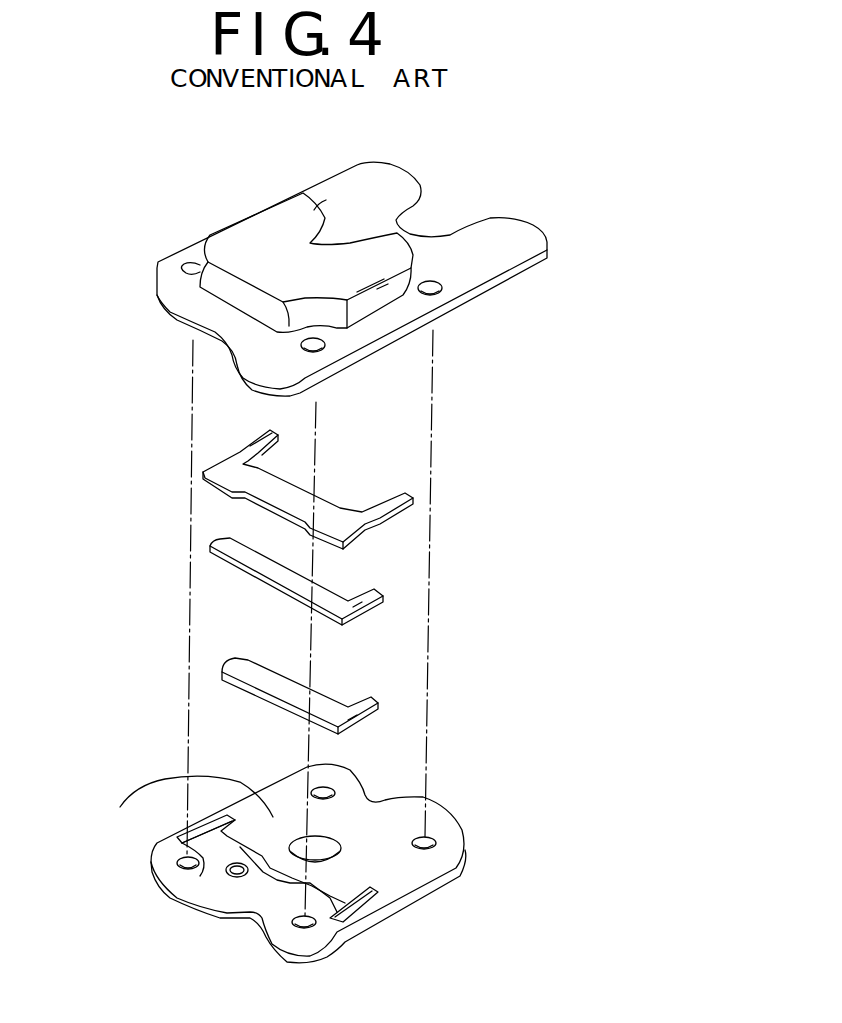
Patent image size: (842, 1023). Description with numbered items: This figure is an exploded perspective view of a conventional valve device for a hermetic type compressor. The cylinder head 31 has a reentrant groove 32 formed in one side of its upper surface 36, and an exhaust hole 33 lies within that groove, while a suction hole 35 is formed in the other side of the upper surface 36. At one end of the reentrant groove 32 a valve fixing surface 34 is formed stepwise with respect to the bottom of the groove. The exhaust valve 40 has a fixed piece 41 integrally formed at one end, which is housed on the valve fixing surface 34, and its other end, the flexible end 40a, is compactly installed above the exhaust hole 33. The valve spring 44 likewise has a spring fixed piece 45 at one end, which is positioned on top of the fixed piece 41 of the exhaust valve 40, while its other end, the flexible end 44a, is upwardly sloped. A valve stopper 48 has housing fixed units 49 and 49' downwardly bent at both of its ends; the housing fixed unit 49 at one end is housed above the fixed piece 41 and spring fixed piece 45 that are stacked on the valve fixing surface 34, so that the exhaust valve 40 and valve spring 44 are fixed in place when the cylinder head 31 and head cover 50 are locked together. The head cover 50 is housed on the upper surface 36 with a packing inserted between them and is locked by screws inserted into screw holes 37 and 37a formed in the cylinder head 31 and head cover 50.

The head cover 50 is at (397, 274).
The screw hole 37a is at (477, 281).
The valve stopper 48 is at (332, 485).
The housing fixed unit 49' is at (189, 445).
The housing fixed unit 49 is at (421, 511).
The valve spring 44 is at (306, 573).
The flexible end 44a is at (215, 547).
The spring fixed piece 45 is at (382, 617).
The exhaust valve 40 is at (315, 685).
The flexible end 40a is at (222, 670).
The fixed piece 41 is at (355, 718).
The cylinder head 31 is at (349, 868).
The reentrant groove 32 is at (270, 890).
The exhaust hole 33 is at (227, 880).
The valve fixing surface 34 is at (407, 916).
The suction hole 35 is at (325, 848).
The upper surface 36 is at (120, 807).
The screw hole 37 is at (177, 863).